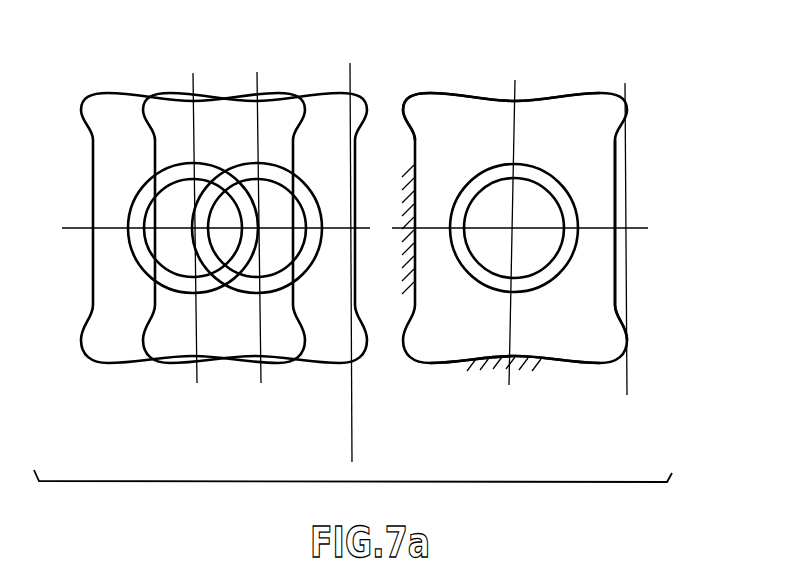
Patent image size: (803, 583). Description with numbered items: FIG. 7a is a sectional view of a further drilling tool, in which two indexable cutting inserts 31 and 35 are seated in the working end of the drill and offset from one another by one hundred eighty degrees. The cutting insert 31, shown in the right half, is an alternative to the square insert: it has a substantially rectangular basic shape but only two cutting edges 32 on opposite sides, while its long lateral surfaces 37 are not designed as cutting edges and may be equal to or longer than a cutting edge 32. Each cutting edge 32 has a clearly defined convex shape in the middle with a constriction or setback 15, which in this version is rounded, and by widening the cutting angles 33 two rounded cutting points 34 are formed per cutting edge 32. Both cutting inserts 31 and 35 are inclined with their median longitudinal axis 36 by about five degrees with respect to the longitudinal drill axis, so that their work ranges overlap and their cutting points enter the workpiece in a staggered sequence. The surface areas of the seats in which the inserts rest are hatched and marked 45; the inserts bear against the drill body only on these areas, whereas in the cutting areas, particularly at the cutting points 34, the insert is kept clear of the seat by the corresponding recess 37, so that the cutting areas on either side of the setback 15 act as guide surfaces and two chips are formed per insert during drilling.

The constriction or setback 15 is at (516, 358).
The cutting insert 31 is at (600, 196).
The cutting edge 32 is at (493, 76).
The cutting angle 33 is at (623, 107).
The cutting point 34 is at (422, 93).
The cutting insert 35 is at (325, 335).
The median longitudinal axis 36 is at (520, 120).
The long lateral surface 37 is at (613, 276).
The seat surface area 45 is at (405, 250).